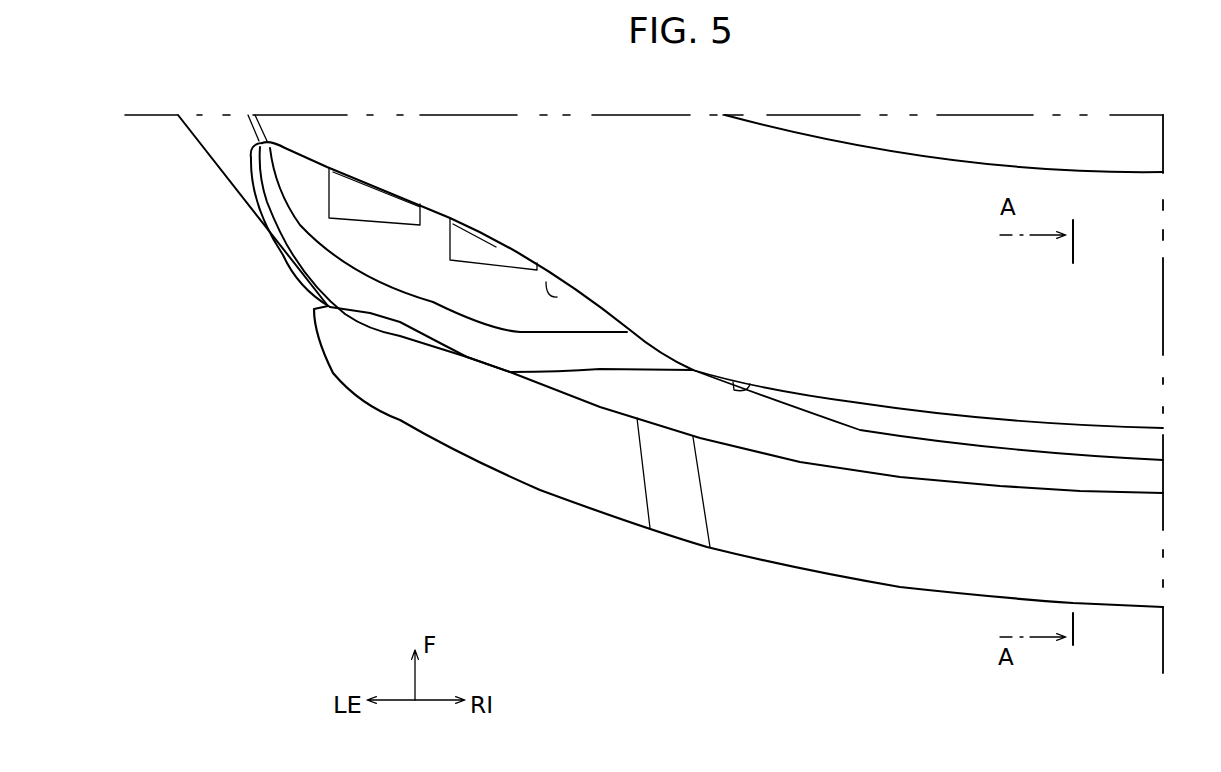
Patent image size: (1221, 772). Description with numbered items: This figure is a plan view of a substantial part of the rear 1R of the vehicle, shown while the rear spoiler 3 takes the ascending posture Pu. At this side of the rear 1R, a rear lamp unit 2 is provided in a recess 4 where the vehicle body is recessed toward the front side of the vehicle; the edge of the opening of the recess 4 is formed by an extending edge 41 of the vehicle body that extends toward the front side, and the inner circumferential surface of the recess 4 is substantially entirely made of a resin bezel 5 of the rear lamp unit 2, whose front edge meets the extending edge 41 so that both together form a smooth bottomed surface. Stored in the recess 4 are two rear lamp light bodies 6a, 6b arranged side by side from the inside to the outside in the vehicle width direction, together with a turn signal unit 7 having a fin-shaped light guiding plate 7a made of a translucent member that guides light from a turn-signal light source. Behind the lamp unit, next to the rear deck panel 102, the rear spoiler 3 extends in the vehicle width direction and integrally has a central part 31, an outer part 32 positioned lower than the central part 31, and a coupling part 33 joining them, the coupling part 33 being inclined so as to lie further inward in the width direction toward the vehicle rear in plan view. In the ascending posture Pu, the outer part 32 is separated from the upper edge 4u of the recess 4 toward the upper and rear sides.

The rear of the vehicle 1R is at (368, 520).
The rear lamp unit 2 is at (410, 331).
The rear spoiler 3 is at (880, 599).
The central part 31 is at (795, 543).
The outer part 32 is at (600, 498).
The coupling part 33 is at (680, 520).
The recess 4 is at (320, 316).
The extending edge 41 is at (617, 345).
The upper edge of the recess 4u is at (555, 292).
The bezel 5 is at (580, 312).
The rear lamp light body 6a is at (491, 278).
The rear lamp light body 6b is at (384, 238).
The turn signal unit 7 is at (289, 198).
The fin-shaped light guiding plate 7a is at (290, 168).
The rear deck panel 102 is at (1146, 331).
The ascending posture Pu is at (814, 594).